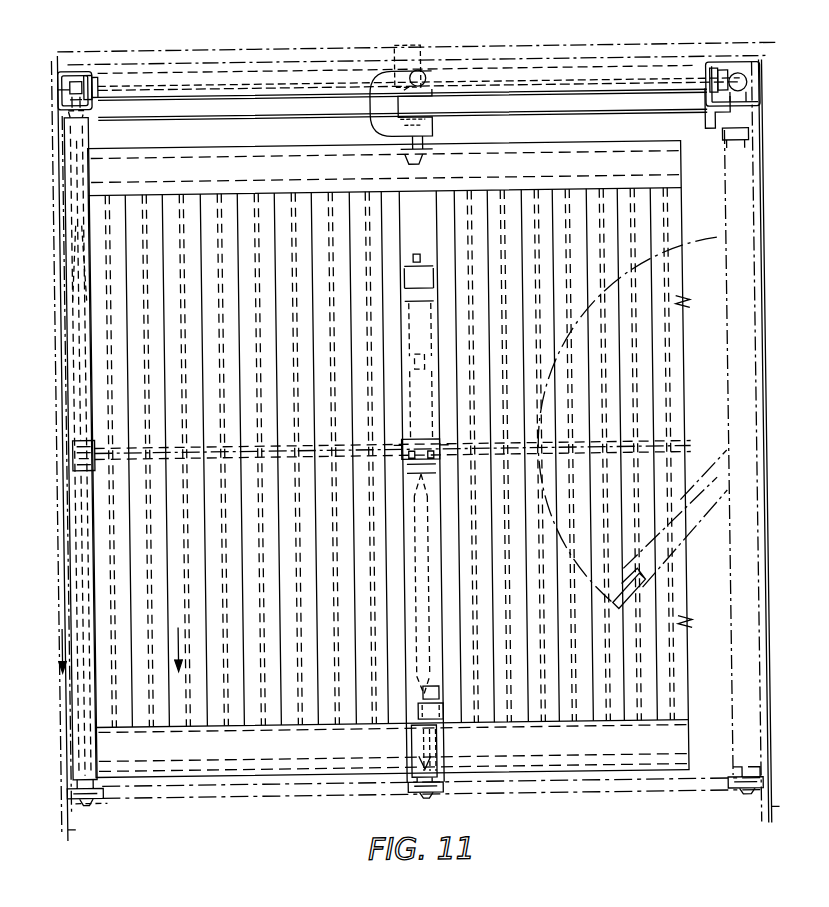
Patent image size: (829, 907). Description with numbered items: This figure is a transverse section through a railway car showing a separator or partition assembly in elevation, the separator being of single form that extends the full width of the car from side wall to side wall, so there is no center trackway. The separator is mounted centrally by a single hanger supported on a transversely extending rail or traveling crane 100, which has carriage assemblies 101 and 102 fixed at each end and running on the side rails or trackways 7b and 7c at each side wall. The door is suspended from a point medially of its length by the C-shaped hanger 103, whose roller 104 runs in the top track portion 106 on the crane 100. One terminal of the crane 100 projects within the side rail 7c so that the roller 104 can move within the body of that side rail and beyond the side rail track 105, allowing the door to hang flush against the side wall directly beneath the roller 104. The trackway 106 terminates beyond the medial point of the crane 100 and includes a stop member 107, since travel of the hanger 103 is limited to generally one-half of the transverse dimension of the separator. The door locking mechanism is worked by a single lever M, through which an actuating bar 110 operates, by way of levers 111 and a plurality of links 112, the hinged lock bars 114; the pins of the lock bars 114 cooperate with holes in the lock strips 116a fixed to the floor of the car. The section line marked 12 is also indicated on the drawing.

The upper left corner detail 7b is at (60, 81).
The upper right corner detail 7c is at (763, 70).
The header beam 100 is at (530, 105).
The left roller assembly 101 is at (100, 75).
The right roller assembly 102 is at (715, 80).
The hanger bracket 103 is at (386, 79).
The roller 104 is at (426, 78).
The right guide 105 is at (718, 118).
The track 106 is at (558, 88).
The bracket 107 is at (403, 70).
The door panel 110 is at (260, 453).
The latch 111 is at (78, 457).
The left post 112 is at (80, 590).
The center post 114 is at (86, 760).
The bottom roller 116a is at (92, 795).
The section line 12 is at (121, 643).
The motor M is at (706, 522).